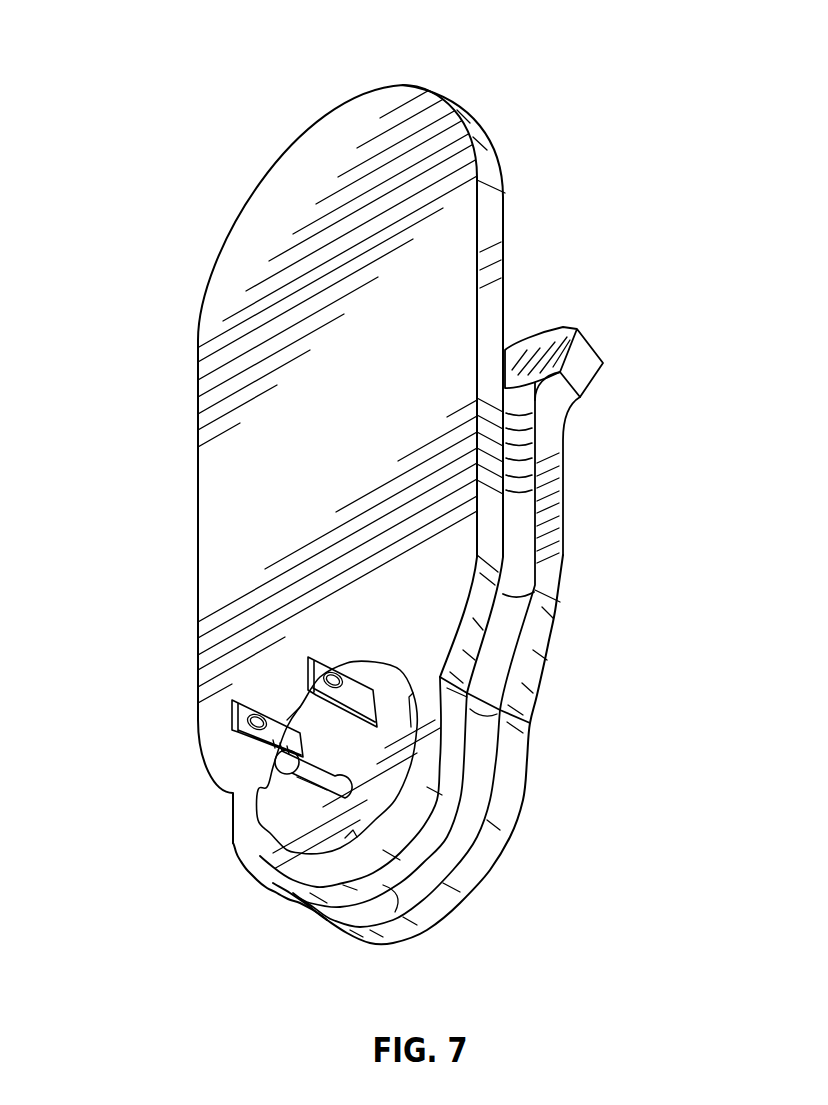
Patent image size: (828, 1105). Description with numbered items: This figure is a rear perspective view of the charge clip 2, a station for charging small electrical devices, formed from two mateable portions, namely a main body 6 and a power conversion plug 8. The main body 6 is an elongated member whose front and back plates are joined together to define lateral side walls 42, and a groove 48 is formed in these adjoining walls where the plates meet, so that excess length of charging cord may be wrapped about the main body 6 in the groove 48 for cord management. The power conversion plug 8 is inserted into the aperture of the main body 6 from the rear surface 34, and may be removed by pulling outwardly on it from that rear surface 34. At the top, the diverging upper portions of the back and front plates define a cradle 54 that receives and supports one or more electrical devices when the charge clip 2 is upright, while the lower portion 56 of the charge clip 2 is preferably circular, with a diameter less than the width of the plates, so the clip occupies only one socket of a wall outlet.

The charge clip 2 is at (160, 74).
The main body 6 is at (197, 525).
The power conversion plug 8 is at (268, 833).
The rear surface 34 is at (225, 722).
The lateral side walls 42 is at (553, 571).
The groove 48 is at (527, 521).
The cradle 54 is at (547, 270).
The lower portion 56 is at (452, 912).